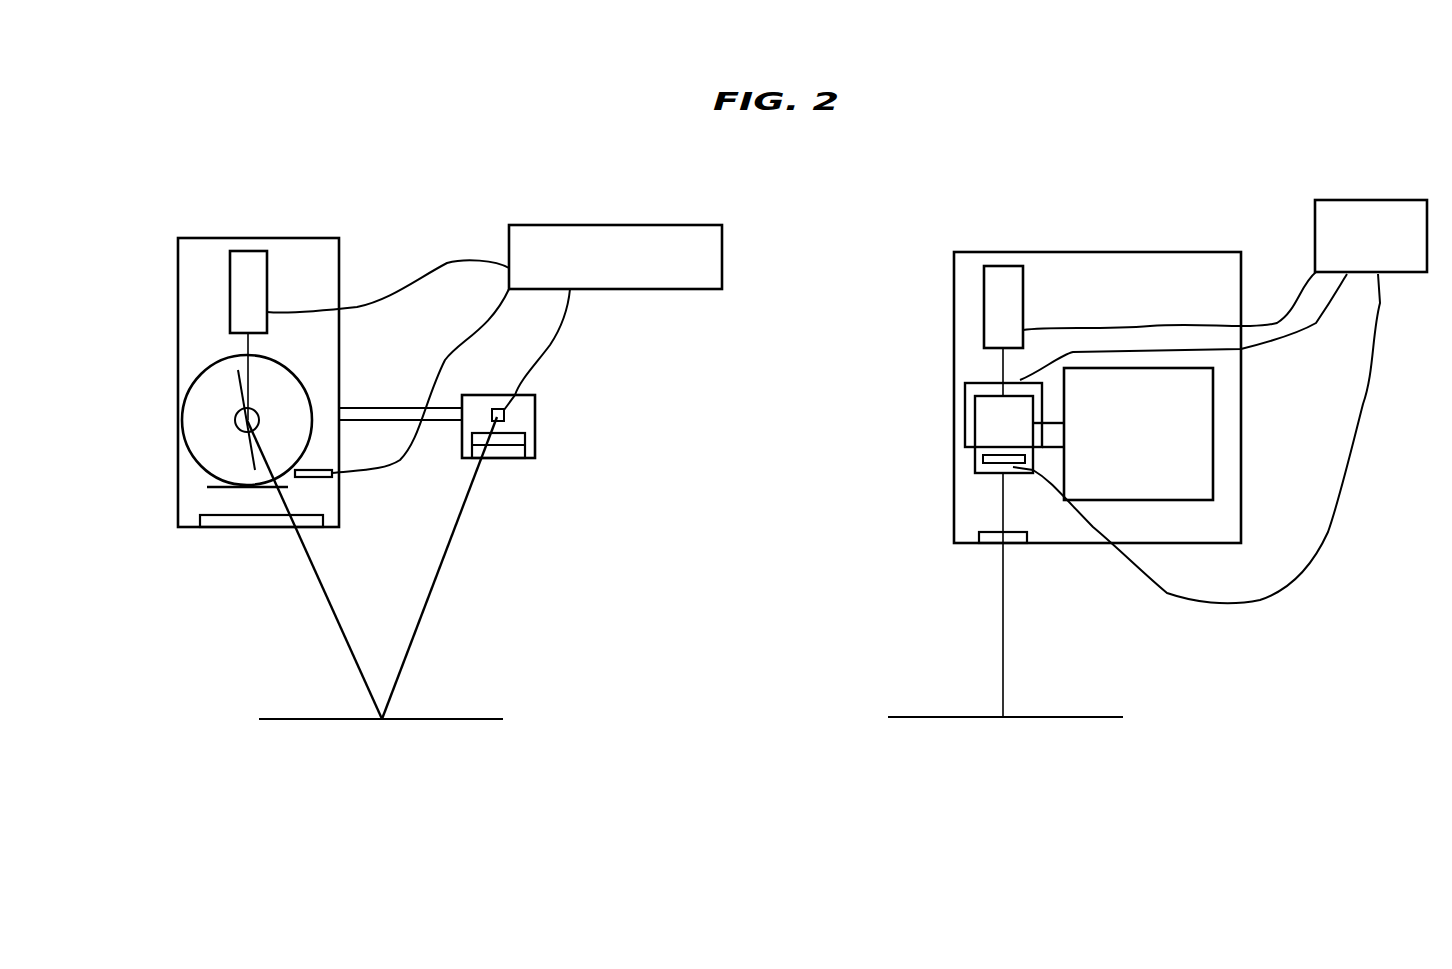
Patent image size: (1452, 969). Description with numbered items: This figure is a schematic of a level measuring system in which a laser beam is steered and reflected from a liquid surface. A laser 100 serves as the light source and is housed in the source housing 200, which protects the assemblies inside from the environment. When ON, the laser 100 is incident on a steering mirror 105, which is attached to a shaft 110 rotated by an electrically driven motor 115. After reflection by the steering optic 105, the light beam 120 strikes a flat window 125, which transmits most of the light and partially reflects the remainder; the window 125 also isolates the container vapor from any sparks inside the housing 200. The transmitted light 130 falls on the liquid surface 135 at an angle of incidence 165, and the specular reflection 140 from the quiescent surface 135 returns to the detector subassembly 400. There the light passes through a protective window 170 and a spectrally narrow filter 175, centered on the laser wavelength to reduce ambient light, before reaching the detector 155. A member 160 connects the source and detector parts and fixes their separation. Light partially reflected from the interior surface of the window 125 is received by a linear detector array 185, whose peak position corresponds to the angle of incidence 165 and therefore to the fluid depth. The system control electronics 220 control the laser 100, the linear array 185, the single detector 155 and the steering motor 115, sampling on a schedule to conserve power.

The laser 100 is at (290, 285).
The steering mirror 105 is at (217, 390).
The shaft 110 is at (223, 427).
The motor 115 is at (1155, 515).
The light beam 120 is at (257, 382).
The window 125 is at (262, 533).
The transmitted light 130 is at (317, 593).
The liquid surface 135 is at (295, 717).
The specular reflection 140 is at (420, 606).
The detector 155 is at (497, 403).
The connecting member 160 is at (410, 402).
The angle of incidence 165 is at (323, 700).
The detector window 170 is at (528, 450).
The spectrally narrow filter 175 is at (527, 440).
The linear detector array 185 is at (313, 478).
The source housing 200 is at (282, 238).
The system control electronics 220 is at (630, 289).
The detector subassembly 400 is at (540, 392).